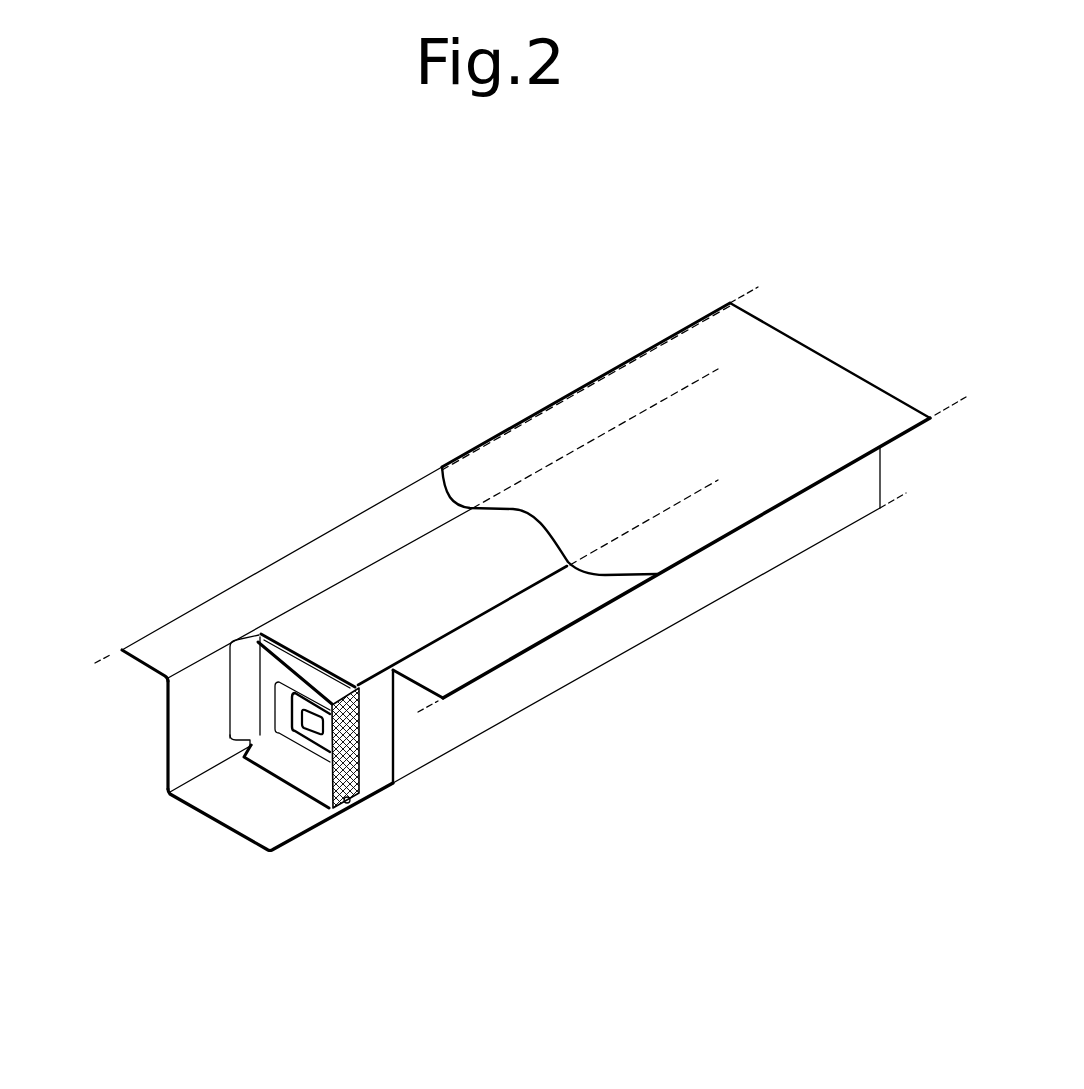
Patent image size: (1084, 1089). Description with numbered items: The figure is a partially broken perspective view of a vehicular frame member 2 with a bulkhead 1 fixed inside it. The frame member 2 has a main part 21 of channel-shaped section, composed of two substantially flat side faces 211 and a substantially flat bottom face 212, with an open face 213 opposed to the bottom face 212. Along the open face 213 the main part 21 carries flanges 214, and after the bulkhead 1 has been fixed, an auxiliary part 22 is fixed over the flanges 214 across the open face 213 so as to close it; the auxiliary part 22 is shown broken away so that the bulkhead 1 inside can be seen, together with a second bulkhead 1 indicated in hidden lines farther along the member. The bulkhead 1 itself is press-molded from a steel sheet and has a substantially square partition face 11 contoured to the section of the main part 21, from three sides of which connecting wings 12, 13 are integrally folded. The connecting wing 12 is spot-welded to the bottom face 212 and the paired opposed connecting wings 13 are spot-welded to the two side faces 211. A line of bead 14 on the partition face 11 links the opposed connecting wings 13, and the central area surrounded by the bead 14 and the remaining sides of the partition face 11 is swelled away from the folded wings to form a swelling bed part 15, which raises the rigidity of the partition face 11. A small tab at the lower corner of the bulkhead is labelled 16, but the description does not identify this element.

The bulkhead 1 is at (464, 583).
The partition face 11 is at (230, 653).
The connecting wing 12 is at (282, 777).
The connecting wing 13 is at (247, 693).
The bead 14 is at (300, 664).
The swelling bed part 15 is at (298, 737).
The tab of connector 16 is at (250, 741).
The vehicular frame member 2 is at (514, 601).
The main part 21 is at (514, 642).
The auxiliary part 22 is at (592, 474).
The side face 211 is at (192, 725).
The bottom face 212 is at (235, 803).
The open face 213 is at (500, 584).
The flange 214 is at (368, 530).